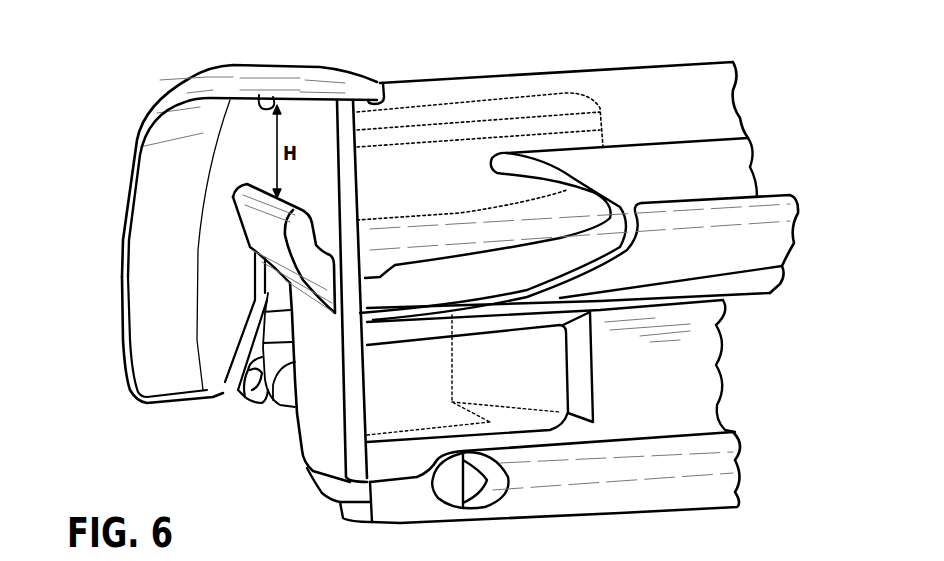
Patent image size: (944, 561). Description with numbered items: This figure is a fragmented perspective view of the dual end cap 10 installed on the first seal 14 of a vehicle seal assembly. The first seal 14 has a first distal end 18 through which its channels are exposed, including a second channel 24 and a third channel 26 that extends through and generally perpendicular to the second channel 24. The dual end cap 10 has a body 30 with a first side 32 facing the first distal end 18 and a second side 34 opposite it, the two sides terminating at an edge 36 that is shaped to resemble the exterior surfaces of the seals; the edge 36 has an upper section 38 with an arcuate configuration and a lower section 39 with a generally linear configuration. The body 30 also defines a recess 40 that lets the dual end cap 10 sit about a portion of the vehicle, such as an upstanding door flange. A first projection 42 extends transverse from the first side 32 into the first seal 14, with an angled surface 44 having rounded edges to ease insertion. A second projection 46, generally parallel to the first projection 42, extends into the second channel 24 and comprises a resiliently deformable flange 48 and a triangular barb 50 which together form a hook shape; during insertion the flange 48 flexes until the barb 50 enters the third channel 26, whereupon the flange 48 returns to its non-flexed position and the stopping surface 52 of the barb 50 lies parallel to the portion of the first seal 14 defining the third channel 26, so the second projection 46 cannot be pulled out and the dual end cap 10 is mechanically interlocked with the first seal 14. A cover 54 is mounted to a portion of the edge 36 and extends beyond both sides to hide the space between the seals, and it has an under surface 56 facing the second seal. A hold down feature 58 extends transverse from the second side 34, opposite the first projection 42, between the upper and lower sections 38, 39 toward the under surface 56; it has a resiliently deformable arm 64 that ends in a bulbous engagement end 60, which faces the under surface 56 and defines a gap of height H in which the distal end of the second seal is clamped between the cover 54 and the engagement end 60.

The dual end cap 10 is at (81, 134).
The first seal 14 is at (461, 80).
The first distal end 18 is at (382, 80).
The second channel 24 is at (440, 470).
The third channel 26 is at (477, 315).
The body 30 is at (290, 444).
The first side 32 is at (353, 147).
The second side 34 is at (207, 345).
The edge 36 is at (343, 133).
The upper section 38 is at (221, 126).
The lower section 39 is at (306, 477).
The recess 40 is at (272, 405).
The first projection 42 is at (531, 95).
The angled surface 44 is at (567, 190).
The second projection 46 is at (566, 385).
The flange 48 is at (517, 370).
The barb 50 is at (720, 309).
The stopping surface 52 is at (783, 265).
The cover 54 is at (221, 73).
The under surface 56 is at (268, 92).
The hold down feature 58 is at (248, 246).
The engagement end 60 is at (243, 203).
The arm 64 is at (247, 223).